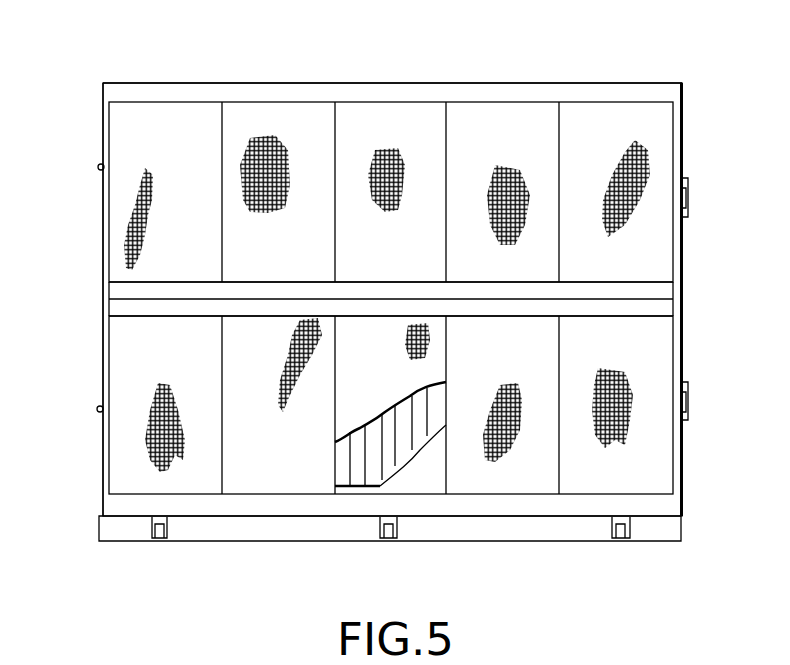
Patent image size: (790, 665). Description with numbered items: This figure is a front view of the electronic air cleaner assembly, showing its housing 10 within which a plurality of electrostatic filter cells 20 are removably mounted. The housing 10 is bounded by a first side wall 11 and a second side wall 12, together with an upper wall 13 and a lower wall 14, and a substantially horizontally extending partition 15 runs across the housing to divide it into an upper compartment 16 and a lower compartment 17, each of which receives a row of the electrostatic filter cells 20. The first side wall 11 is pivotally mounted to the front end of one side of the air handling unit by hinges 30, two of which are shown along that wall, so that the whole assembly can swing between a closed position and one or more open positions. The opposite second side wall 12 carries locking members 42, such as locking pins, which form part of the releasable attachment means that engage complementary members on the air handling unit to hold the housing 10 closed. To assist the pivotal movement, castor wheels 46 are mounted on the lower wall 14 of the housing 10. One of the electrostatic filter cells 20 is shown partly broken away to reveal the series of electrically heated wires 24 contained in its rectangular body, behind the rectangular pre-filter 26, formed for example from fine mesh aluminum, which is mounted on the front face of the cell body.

The housing 10 is at (126, 76).
The first side wall 11 is at (683, 291).
The second side wall 12 is at (103, 265).
The upper wall 13 is at (367, 83).
The lower wall 14 is at (495, 520).
The horizontally extending partition 15 is at (128, 300).
The upper compartment 16 is at (104, 220).
The lower compartment 17 is at (104, 369).
The electrostatic filter cell 20 is at (262, 114).
The electrically heated wires 24 is at (365, 455).
The pre-filter 26 is at (388, 398).
The hinge 30 is at (688, 197).
The locking member 42 is at (98, 172).
The castor wheel 46 is at (158, 540).